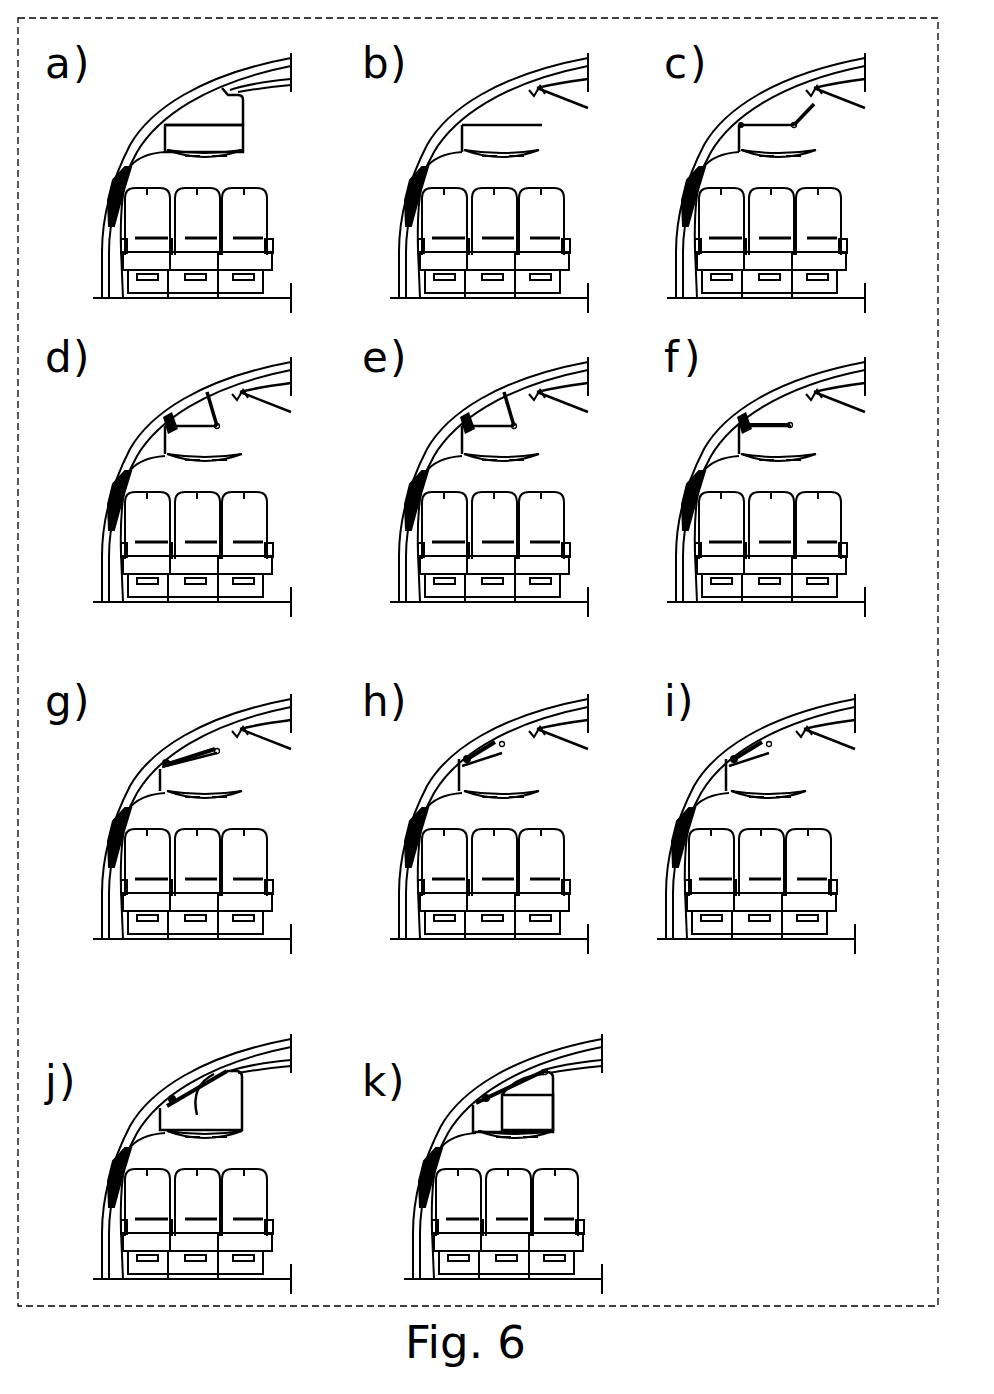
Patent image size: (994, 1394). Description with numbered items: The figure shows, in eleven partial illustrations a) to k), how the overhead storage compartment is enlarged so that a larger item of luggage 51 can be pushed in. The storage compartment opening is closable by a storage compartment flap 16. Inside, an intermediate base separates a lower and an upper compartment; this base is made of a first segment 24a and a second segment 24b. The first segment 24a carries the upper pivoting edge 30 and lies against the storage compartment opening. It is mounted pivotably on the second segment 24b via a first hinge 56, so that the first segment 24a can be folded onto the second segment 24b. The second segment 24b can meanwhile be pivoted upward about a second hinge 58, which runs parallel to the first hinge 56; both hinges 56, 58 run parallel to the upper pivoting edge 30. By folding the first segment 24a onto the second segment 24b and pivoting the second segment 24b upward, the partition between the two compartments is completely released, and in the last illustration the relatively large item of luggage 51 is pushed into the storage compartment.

The storage compartment flap 16 is at (586, 110).
The upper pivoting edge 30 is at (250, 117).
The first segment 24a is at (236, 123).
The second segment 24b is at (195, 123).
The second hinge 58 is at (745, 128).
The first hinge 56 is at (802, 122).
The item of luggage 51 is at (552, 1110).